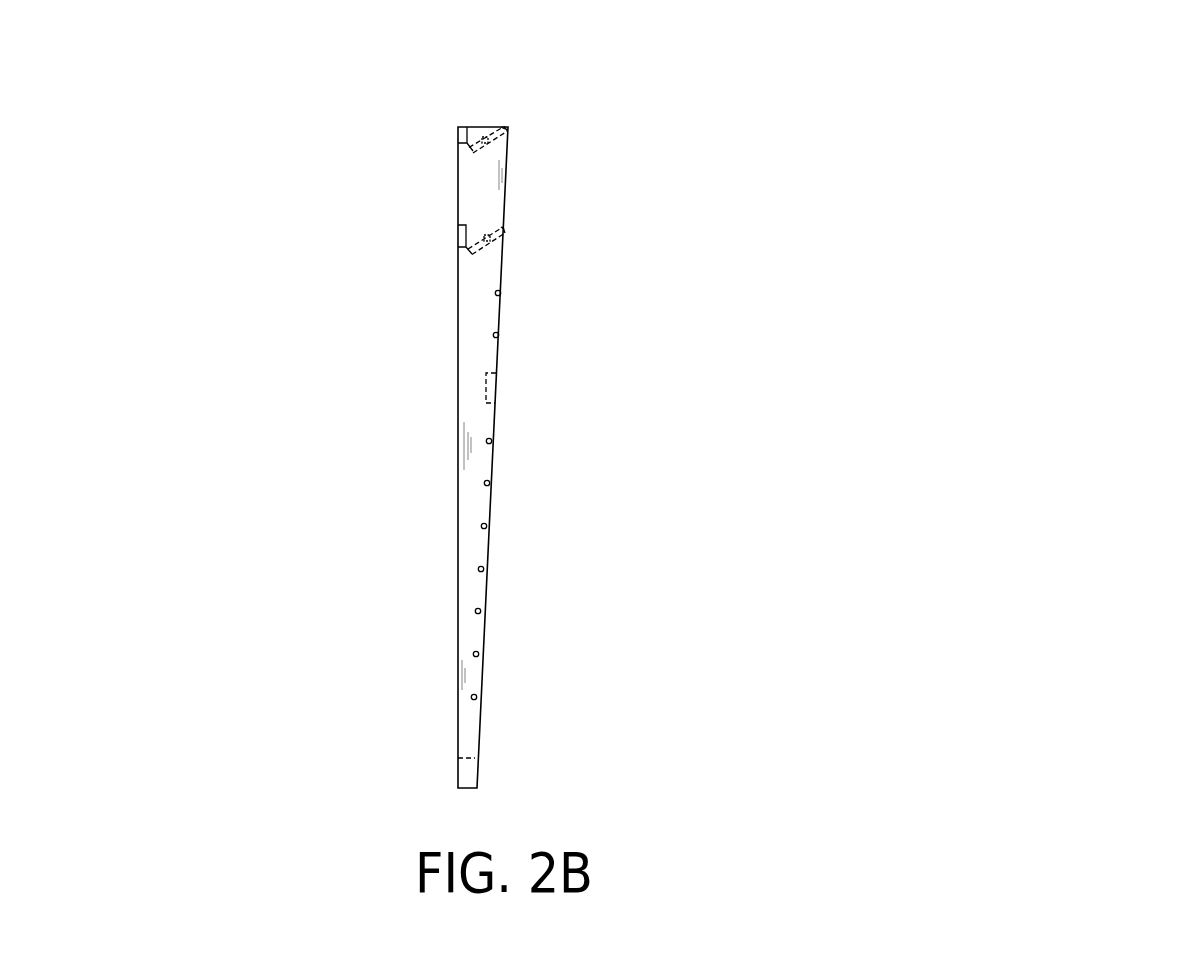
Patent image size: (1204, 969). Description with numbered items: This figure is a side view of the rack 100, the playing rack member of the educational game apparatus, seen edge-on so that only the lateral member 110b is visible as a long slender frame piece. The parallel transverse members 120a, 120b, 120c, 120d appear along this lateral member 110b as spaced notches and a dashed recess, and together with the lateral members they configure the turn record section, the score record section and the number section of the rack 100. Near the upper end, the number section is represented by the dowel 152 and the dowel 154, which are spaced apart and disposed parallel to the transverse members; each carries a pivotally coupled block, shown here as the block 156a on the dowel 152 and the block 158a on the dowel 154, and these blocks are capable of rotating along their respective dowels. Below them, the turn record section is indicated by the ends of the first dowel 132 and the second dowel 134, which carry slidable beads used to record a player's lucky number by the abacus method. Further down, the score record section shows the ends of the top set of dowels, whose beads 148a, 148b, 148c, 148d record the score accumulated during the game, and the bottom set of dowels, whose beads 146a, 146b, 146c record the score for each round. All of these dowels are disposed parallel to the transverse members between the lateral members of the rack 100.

The rack 100 is at (973, 125).
The lateral member 110b is at (470, 483).
The transverse member 120a is at (469, 776).
The transverse member 120b is at (499, 385).
The transverse member 120c is at (465, 234).
The transverse member 120d is at (464, 138).
The first dowel 132 is at (499, 335).
The second dowel 134 is at (501, 293).
The bead of bottom set of beads 146a is at (477, 697).
The bead of bottom set of beads 146b is at (479, 654).
The bead of bottom set of beads 146c is at (481, 611).
The bead of top set of beads 148a is at (484, 569).
The bead of top set of beads 148b is at (487, 526).
The bead of top set of beads 148c is at (490, 483).
The bead of top set of beads 148d is at (492, 441).
The dowel 152 is at (488, 238).
The dowel 154 is at (488, 139).
The block 156a is at (503, 228).
The block 158a is at (503, 127).